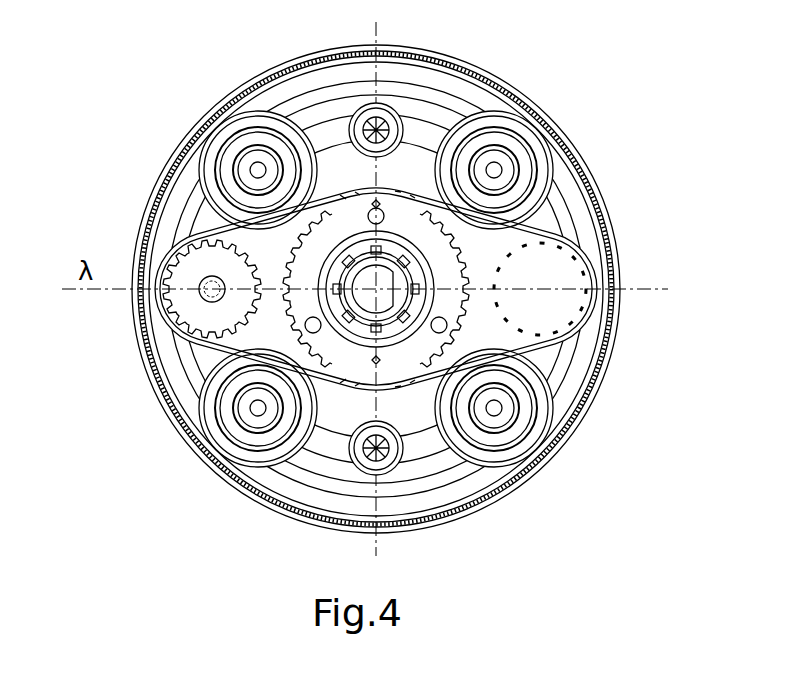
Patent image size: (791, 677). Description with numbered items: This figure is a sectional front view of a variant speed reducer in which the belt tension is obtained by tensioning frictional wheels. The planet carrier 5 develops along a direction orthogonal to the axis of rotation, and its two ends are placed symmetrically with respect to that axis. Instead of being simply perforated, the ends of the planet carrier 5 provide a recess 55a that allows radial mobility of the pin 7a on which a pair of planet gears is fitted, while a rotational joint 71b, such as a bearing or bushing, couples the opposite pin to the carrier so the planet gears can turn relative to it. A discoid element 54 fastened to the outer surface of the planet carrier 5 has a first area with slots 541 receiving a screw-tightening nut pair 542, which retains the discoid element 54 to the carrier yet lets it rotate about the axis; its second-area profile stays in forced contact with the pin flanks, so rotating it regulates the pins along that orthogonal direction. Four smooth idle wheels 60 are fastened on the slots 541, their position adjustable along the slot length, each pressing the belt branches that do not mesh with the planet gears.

The discoid element 54 is at (315, 120).
The slots 541 is at (423, 140).
The screw-tightening nut pair 542 is at (383, 124).
The idle wheels 60 is at (237, 150).
The planet carrier 5 is at (208, 212).
The pin 7a is at (205, 285).
The recess 55a is at (170, 332).
The rotational joint 71b is at (573, 347).